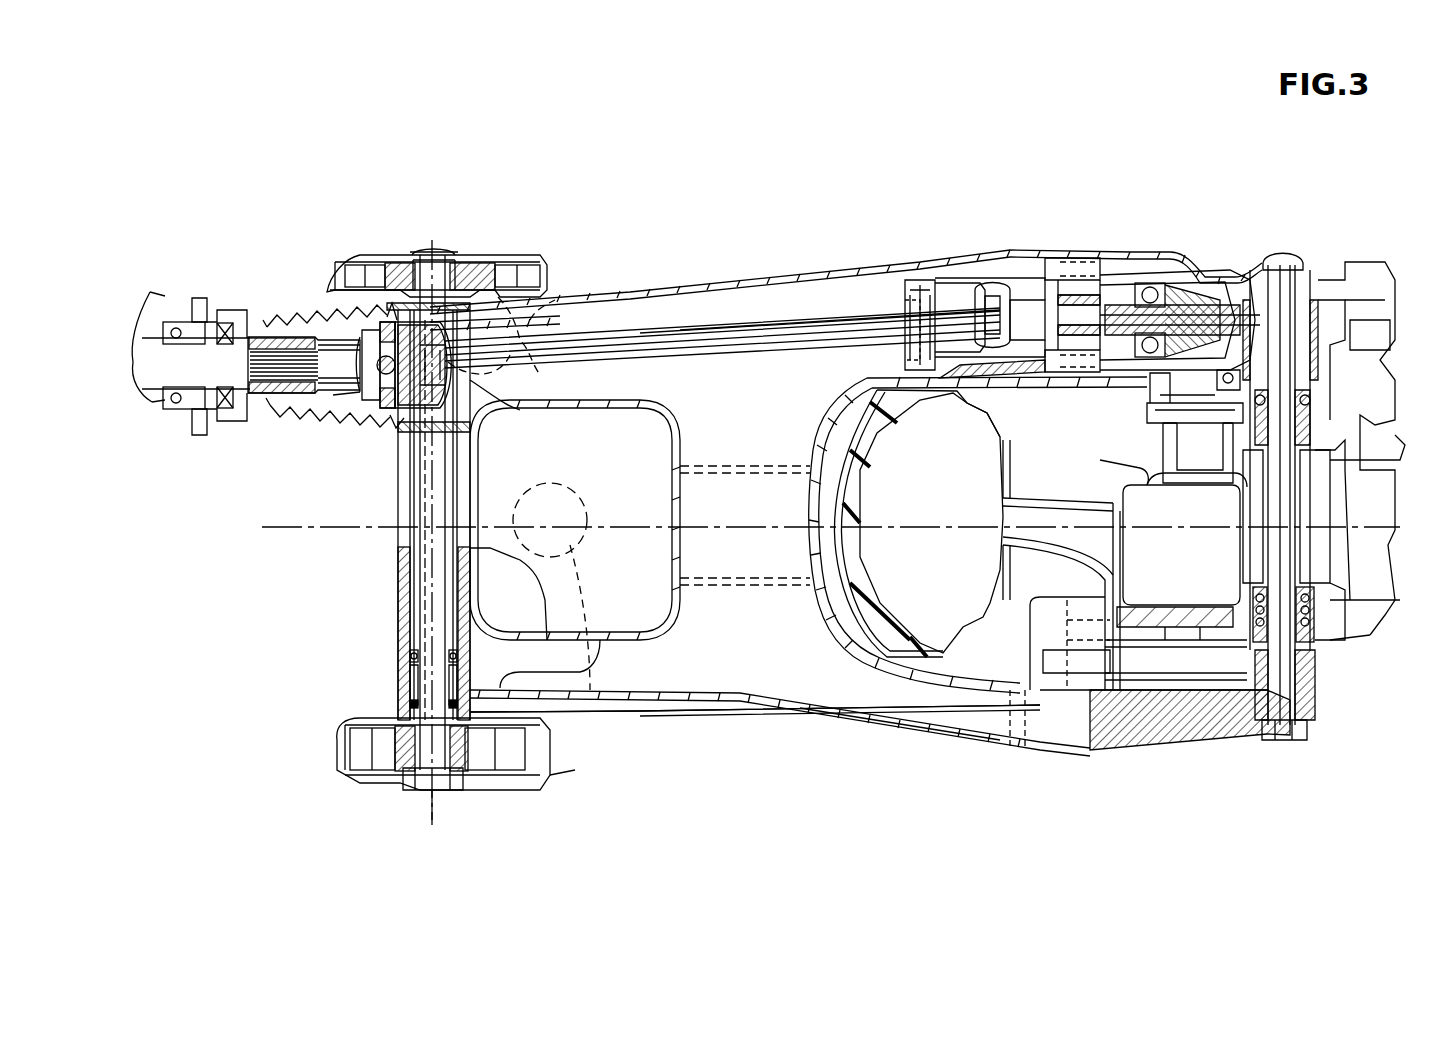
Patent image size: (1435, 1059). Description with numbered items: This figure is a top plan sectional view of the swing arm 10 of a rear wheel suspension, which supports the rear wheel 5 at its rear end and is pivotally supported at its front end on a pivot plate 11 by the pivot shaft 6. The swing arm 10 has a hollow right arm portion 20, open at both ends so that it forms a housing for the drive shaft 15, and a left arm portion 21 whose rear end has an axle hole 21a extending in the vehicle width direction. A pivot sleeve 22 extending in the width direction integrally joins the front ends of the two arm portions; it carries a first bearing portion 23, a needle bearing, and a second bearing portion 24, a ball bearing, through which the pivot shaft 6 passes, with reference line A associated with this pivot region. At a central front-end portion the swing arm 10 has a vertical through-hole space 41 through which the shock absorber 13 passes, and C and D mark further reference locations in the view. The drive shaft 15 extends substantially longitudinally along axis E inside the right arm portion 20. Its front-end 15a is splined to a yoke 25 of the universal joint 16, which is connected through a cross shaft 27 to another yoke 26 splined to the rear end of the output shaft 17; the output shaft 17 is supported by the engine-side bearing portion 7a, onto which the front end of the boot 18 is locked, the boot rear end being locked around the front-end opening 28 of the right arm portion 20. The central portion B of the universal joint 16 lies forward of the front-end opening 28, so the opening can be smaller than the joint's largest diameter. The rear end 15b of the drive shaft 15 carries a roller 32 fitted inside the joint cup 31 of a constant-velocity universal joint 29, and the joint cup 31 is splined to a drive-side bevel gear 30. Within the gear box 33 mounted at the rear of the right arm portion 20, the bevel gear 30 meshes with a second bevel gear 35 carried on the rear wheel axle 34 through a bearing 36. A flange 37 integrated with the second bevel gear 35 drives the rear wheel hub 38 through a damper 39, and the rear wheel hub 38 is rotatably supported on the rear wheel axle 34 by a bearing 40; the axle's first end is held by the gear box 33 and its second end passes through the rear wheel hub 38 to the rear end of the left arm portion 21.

The rear wheel 5 is at (995, 432).
The pivot shaft 6 is at (428, 250).
The bearing portion 7a is at (180, 322).
The swing arm 10 is at (757, 258).
The pivot plate 11 is at (360, 255).
The shock absorber 13 is at (590, 695).
The drive shaft 15 is at (760, 350).
The front-end of the drive shaft 15a is at (495, 395).
The rear end of the drive shaft 15b is at (915, 282).
The universal joint 16 is at (310, 322).
The output shaft 17 is at (148, 338).
The boot 18 is at (280, 320).
The right arm portion 20 is at (630, 292).
The left arm portion 21 is at (672, 717).
The axle hole 21a is at (1268, 745).
The pivot sleeve 22 is at (397, 618).
The first bearing portion 23 is at (545, 305).
The second bearing portion 24 is at (397, 655).
The yoke 25 is at (468, 255).
The yoke 26 is at (335, 418).
The cross shaft 27 is at (380, 400).
The front-end opening 28 is at (392, 410).
The constant-velocity universal joint 29 is at (965, 258).
The bevel gear 30 is at (1175, 265).
The joint cup 31 is at (1040, 278).
The roller 32 is at (992, 285).
The gear box 33 is at (1200, 255).
The rear wheel axle 34 is at (1260, 545).
The second bevel gear 35 is at (1300, 290).
The bearing 36 is at (1365, 417).
The flange 37 is at (1150, 428).
The rear wheel hub 38 is at (1145, 478).
The damper 39 is at (1188, 465).
The bearing 40 is at (1340, 445).
The through-hole space 41 is at (613, 478).
The pivot axis A is at (432, 820).
The central portion of the universal joint B is at (335, 395).
The center line C is at (825, 528).
The portion D is at (905, 738).
The axis of the drive shaft E is at (683, 350).